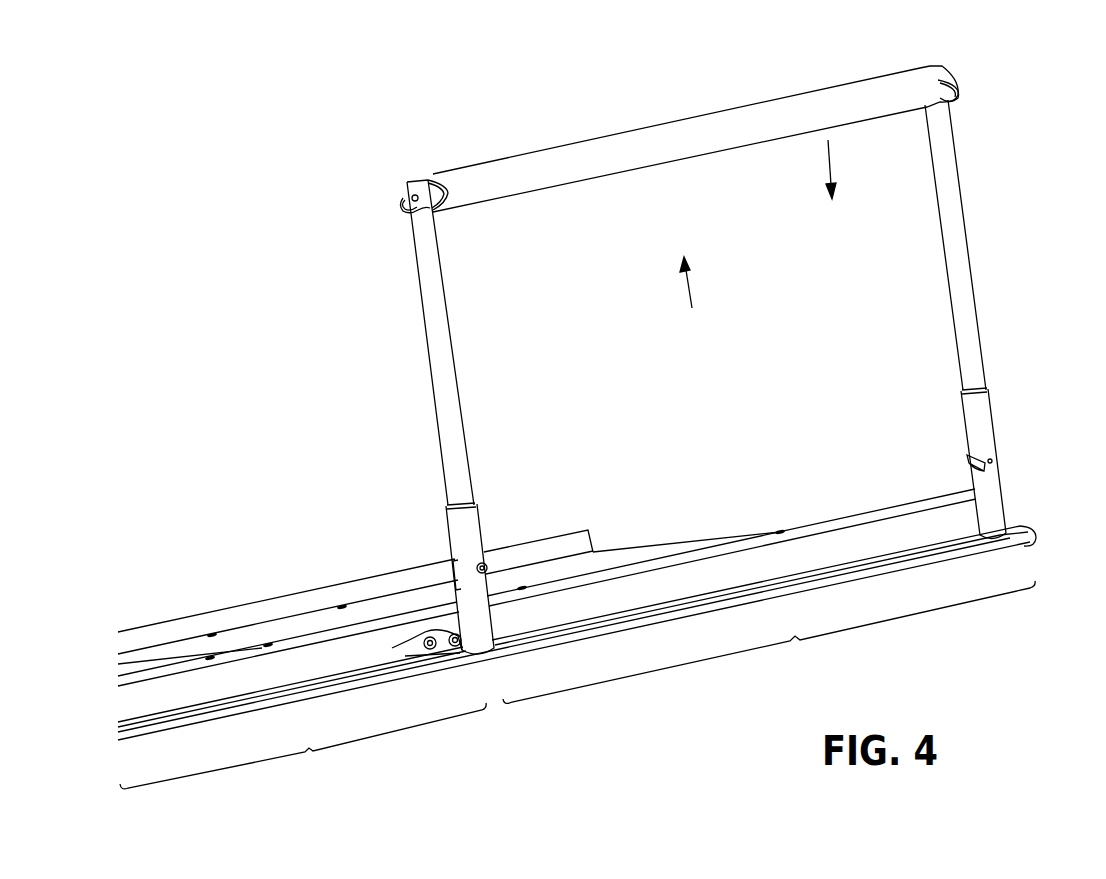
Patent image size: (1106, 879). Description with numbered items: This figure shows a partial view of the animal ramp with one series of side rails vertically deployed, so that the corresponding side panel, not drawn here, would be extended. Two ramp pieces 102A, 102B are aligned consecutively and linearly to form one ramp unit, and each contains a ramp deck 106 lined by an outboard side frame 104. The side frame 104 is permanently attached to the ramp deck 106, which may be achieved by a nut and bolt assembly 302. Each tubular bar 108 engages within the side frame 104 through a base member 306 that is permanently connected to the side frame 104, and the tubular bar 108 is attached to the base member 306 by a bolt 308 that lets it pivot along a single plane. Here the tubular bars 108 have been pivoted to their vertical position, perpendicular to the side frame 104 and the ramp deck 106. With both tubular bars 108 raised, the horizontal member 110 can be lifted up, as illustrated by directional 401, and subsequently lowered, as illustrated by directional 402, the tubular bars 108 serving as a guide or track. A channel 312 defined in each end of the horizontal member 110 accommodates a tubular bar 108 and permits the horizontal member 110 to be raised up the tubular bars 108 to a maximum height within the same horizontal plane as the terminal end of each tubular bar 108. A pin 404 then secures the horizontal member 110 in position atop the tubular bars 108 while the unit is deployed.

The ramp piece 102A is at (769, 642).
The ramp piece 102B is at (303, 746).
The side frame 104 is at (174, 632).
The ramp deck 106 is at (622, 552).
The tubular bar 108 is at (452, 441).
The horizontal member 110 is at (655, 140).
The nut and bolt assembly 302 is at (407, 648).
The base member 306 is at (994, 503).
The bolt 308 is at (484, 565).
The channel 312 is at (426, 180).
The directional 401 is at (695, 300).
The directional 402 is at (847, 169).
The pin 404 is at (403, 198).